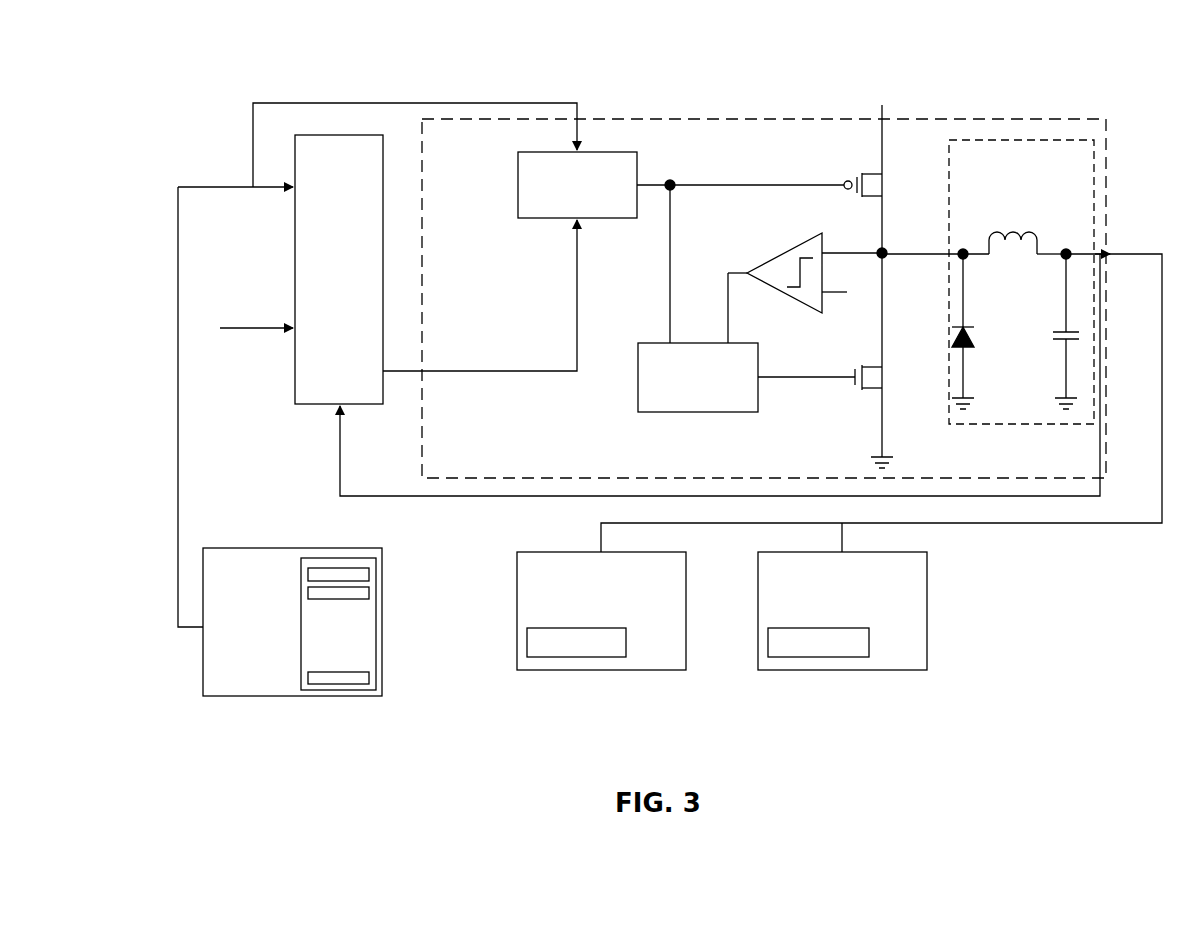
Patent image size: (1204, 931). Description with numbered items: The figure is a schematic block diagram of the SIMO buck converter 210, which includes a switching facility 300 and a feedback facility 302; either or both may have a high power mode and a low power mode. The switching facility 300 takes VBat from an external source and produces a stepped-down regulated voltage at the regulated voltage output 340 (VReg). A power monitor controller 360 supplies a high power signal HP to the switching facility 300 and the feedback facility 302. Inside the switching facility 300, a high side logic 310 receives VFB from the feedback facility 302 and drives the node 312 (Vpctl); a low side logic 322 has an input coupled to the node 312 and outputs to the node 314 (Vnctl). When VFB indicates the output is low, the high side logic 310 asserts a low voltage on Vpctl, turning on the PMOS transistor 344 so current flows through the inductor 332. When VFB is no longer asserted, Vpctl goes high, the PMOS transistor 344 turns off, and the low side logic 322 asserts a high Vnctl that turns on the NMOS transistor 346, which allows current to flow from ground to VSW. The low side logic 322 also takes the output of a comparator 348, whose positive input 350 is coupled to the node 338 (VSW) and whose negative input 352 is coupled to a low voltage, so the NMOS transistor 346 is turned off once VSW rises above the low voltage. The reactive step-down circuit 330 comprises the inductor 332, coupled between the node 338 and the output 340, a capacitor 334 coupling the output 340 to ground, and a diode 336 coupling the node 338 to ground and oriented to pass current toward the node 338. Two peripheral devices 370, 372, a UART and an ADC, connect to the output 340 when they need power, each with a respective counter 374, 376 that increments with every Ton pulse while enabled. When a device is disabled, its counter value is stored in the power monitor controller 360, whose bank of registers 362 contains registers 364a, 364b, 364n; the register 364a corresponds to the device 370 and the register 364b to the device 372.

The SIMO buck converter 210 is at (386, 48).
The feedback facility 302 is at (340, 135).
The switching facility 300 is at (628, 119).
The high side logic 310 is at (518, 185).
The node 312 is at (675, 190).
The low side logic 322 is at (657, 343).
The node 314 is at (808, 378).
The PMOS transistor 344 is at (866, 175).
The NMOS transistor 346 is at (868, 390).
The comparator 348 is at (786, 250).
The positive input 350 is at (856, 252).
The negative input 352 is at (836, 292).
The node 338 is at (886, 258).
The reactive step-down circuit 330 is at (1024, 138).
The inductor 332 is at (1020, 232).
The capacitor 334 is at (1080, 333).
The diode 336 is at (970, 335).
The regulated voltage output 340 is at (1066, 250).
The power monitor controller 360 is at (294, 548).
The bank of registers 362 is at (338, 690).
The register 364a is at (370, 575).
The register 364b is at (370, 590).
The register 364n is at (370, 680).
The peripheral device 370 is at (515, 616).
The peripheral device 372 is at (757, 616).
The counter 374 is at (576, 658).
The counter 376 is at (818, 658).